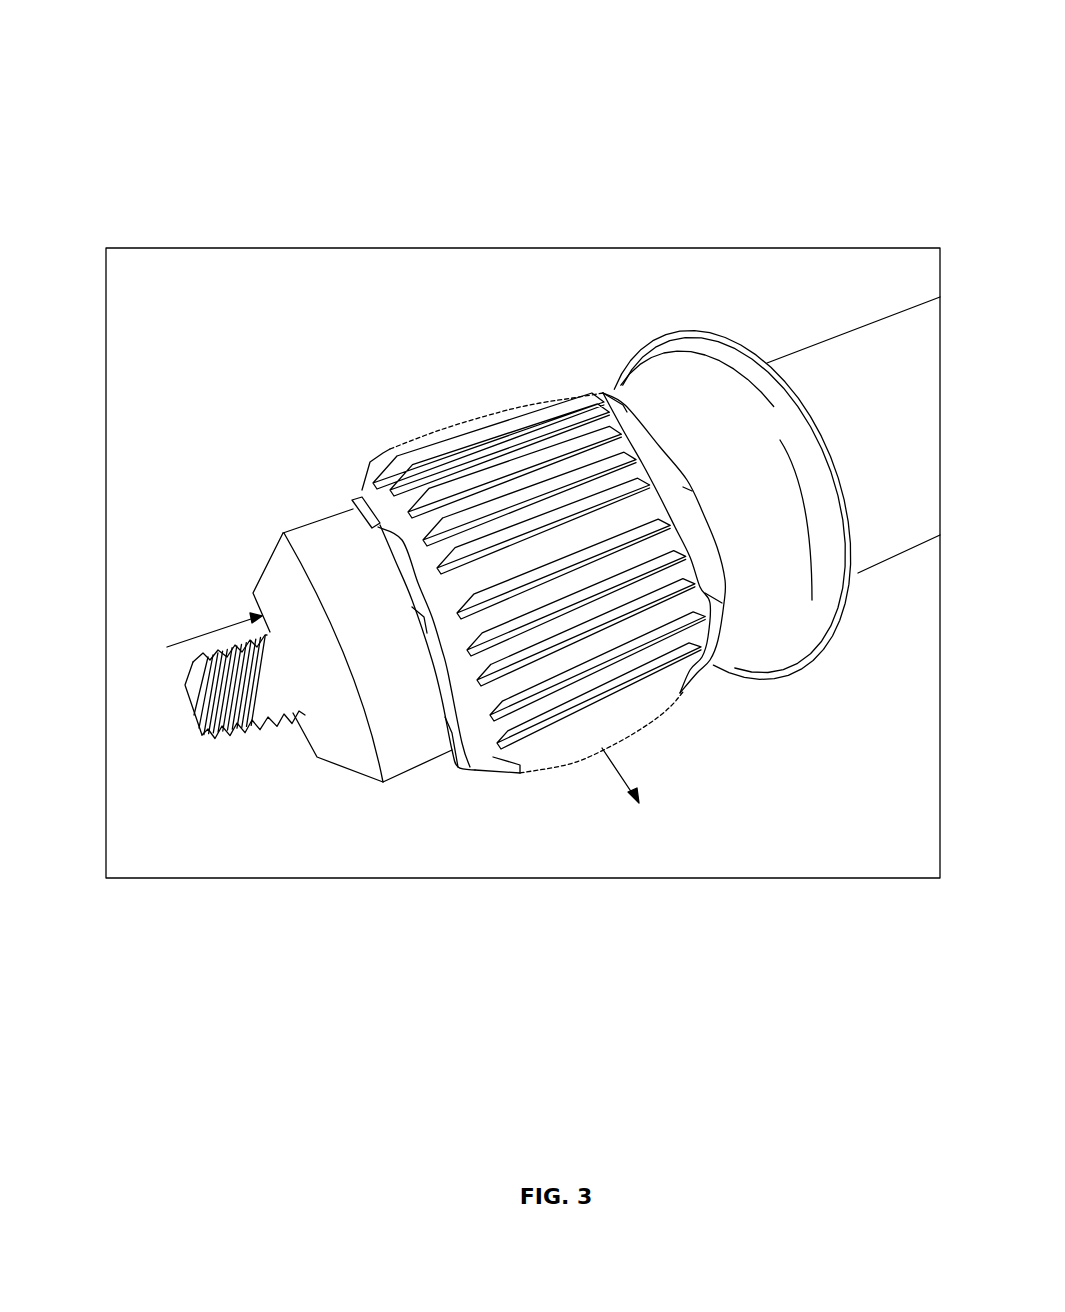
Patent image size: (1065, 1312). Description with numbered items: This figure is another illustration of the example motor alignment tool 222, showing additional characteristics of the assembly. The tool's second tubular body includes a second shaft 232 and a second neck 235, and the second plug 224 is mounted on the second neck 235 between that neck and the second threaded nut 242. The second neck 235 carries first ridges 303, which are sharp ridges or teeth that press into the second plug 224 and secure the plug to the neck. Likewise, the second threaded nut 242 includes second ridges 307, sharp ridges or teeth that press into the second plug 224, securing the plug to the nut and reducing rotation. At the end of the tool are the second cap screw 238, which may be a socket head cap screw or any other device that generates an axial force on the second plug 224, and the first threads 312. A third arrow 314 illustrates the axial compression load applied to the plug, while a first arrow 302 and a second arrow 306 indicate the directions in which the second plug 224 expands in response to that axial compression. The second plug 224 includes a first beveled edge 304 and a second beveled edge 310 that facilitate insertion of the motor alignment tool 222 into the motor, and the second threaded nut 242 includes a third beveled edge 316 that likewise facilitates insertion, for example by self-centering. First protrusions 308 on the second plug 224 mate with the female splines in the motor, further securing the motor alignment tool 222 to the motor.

The motor alignment tool 222 is at (179, 44).
The second shaft 232 is at (877, 322).
The second neck 235 is at (670, 390).
The first beveled edge 304 is at (714, 598).
The first ridges 303 is at (610, 387).
The first arrow 302 is at (475, 427).
The second arrow 306 is at (610, 762).
The second plug 224 is at (539, 437).
The first protrusions 308 is at (494, 655).
The second beveled edge 310 is at (434, 640).
The second ridges 307 is at (357, 507).
The second threaded nut 242 is at (303, 522).
The third beveled edge 316 is at (270, 562).
The third arrow 314 is at (203, 632).
The second cap screw 238 is at (201, 737).
The first threads 312 is at (267, 730).